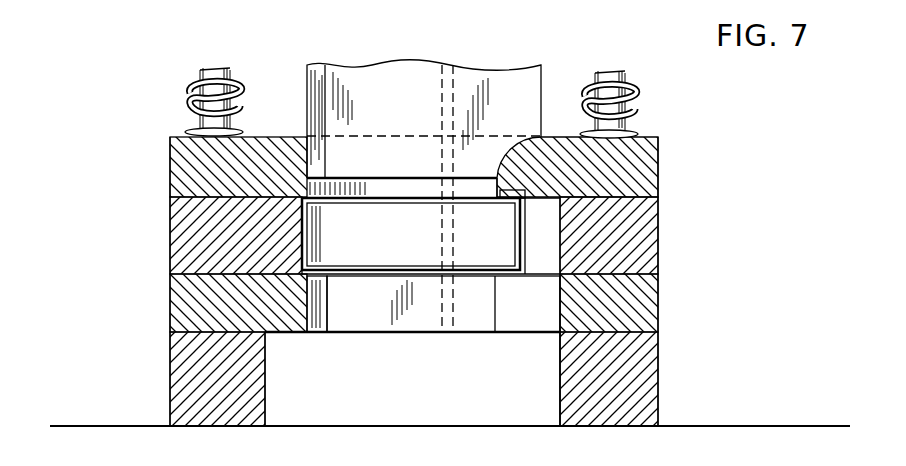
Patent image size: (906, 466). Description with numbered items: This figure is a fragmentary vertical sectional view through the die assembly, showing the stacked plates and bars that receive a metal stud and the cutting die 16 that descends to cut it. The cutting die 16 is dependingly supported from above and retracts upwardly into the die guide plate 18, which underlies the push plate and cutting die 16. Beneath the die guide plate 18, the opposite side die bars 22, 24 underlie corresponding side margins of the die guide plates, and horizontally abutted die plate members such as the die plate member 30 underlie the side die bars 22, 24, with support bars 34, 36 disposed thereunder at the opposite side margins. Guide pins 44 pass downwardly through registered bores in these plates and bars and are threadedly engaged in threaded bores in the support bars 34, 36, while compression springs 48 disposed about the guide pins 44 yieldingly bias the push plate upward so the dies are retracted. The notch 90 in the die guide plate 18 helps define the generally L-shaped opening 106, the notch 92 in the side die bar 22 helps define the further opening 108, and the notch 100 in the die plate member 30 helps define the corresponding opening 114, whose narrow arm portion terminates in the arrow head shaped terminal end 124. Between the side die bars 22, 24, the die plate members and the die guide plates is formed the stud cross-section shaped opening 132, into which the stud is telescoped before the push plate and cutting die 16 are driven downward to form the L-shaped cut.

The cutting die 16 is at (417, 78).
The arrow head shaped terminal end 124 is at (360, 78).
The guide pin 44 is at (205, 97).
The compression spring 48 is at (622, 86).
The notch 90 is at (533, 170).
The die guide plate 18 is at (645, 185).
The side die bar 24 is at (183, 236).
The notch 92 is at (552, 250).
The side die bar 22 is at (650, 266).
The die plate member 30 is at (650, 316).
The support bar 34 is at (648, 382).
The support bar 36 is at (183, 380).
The opening 106 is at (406, 188).
The further opening 108 is at (432, 260).
The opening 114 is at (360, 320).
The stud cross-section shaped opening 132 is at (497, 278).
The notch 100 is at (562, 306).